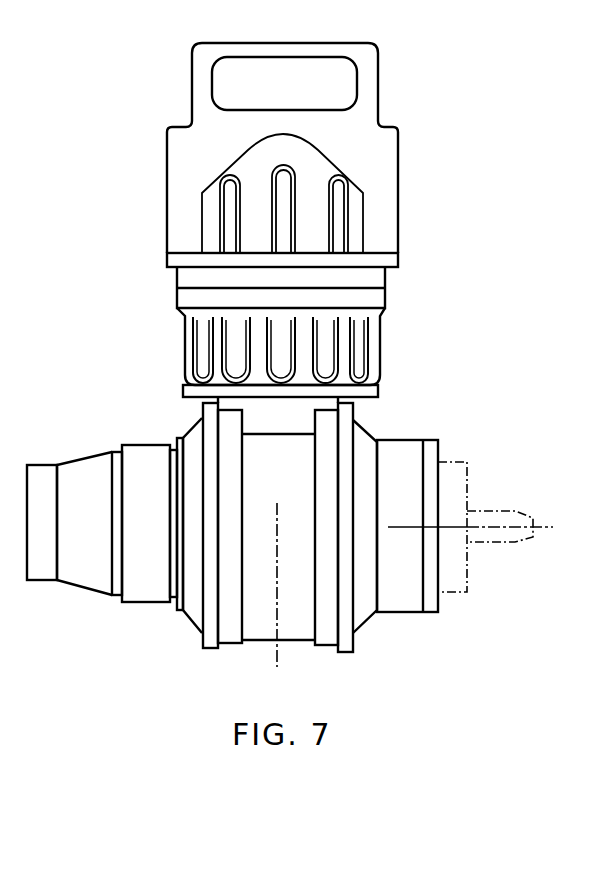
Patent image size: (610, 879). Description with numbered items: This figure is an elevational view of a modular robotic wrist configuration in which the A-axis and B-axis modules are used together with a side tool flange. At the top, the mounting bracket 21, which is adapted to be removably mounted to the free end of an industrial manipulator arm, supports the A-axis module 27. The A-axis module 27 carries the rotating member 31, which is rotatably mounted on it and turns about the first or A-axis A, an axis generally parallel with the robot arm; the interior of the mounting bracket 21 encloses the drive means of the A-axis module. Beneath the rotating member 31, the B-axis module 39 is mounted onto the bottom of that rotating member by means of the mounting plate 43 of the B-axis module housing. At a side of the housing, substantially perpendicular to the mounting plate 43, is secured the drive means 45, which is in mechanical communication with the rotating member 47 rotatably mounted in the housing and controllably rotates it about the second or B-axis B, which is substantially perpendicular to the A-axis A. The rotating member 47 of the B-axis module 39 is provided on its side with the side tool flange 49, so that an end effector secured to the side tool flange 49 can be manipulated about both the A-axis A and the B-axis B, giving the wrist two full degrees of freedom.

The mounting bracket 21 is at (398, 207).
The A-axis module 27 is at (380, 337).
The rotating member 31 is at (360, 375).
The B-axis module 39 is at (357, 427).
The mounting plate 43 is at (184, 399).
The drive means 45 is at (85, 573).
The rotating member 47 is at (253, 630).
The side tool flange 49 is at (428, 603).
The A-axis A is at (278, 507).
The B-axis B is at (546, 528).